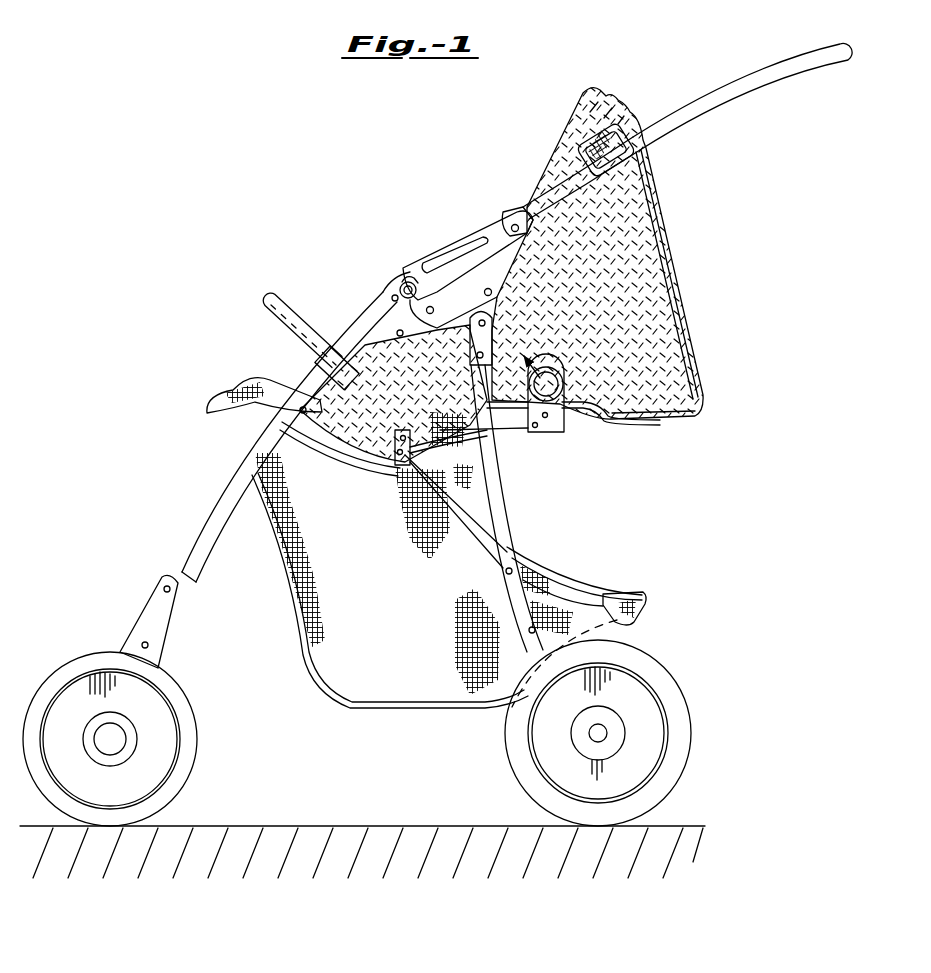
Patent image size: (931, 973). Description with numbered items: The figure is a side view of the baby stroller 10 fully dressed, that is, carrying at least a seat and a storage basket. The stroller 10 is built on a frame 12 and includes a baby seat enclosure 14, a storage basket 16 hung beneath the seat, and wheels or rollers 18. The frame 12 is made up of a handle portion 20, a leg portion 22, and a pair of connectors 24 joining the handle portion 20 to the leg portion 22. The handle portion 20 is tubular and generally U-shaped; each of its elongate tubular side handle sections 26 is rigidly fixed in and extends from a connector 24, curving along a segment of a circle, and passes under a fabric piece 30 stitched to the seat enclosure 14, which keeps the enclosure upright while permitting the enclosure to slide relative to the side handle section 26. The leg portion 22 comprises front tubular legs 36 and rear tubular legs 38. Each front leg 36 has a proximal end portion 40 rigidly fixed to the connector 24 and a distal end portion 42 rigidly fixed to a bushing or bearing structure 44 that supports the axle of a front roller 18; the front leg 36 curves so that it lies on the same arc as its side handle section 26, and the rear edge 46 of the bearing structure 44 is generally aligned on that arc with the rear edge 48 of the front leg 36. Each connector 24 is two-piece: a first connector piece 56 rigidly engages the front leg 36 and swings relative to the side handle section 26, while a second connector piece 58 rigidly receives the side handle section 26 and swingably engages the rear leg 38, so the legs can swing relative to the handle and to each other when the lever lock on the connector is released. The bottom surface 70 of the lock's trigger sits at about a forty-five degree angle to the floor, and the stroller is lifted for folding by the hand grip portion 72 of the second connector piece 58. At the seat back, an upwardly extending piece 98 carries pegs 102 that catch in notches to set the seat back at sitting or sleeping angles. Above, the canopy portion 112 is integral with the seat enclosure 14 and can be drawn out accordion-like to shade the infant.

The baby stroller 10 is at (264, 231).
The frame 12 is at (790, 75).
The baby seat enclosure 14 is at (693, 355).
The storage basket 16 is at (283, 580).
The wheels or rollers 18 is at (663, 660).
The handle portion 20 is at (730, 78).
The leg portion 22 is at (230, 483).
The connector 24 is at (522, 213).
The side handle section 26 is at (712, 112).
The fabric piece 30 is at (622, 162).
The front tubular leg 36 is at (180, 545).
The rear tubular leg 38 is at (508, 538).
The proximal end portion 40 is at (352, 350).
The distal end portion 42 is at (185, 573).
The bushing or bearing structure 44 is at (130, 620).
The rear edge 46 is at (167, 630).
The rear edge 48 is at (217, 530).
The first connector piece 56 is at (373, 313).
The second connector piece 58 is at (430, 258).
The bottom surface 70 is at (402, 287).
The hand grip portion 72 is at (462, 240).
The upwardly extending piece 98 is at (533, 437).
The pegs 102 is at (545, 414).
The canopy portion 112 is at (612, 98).